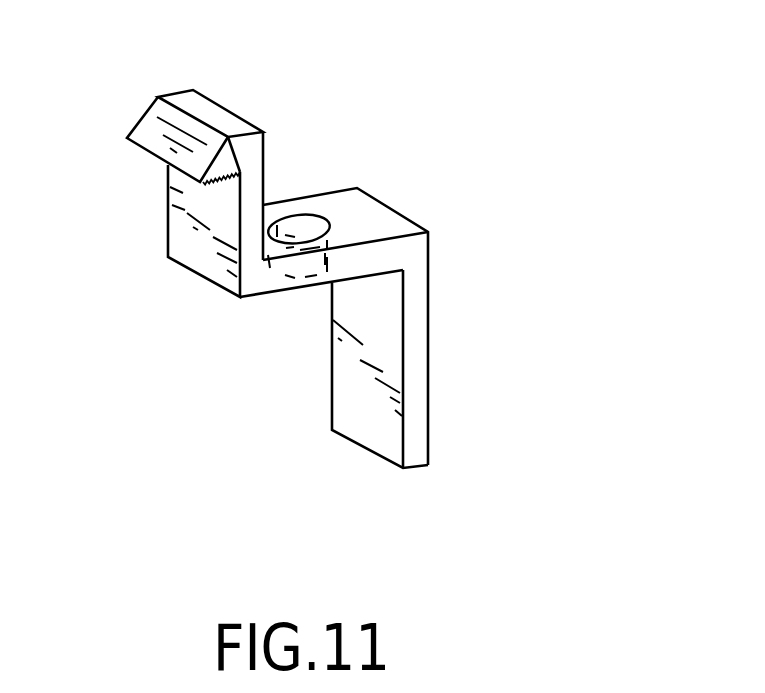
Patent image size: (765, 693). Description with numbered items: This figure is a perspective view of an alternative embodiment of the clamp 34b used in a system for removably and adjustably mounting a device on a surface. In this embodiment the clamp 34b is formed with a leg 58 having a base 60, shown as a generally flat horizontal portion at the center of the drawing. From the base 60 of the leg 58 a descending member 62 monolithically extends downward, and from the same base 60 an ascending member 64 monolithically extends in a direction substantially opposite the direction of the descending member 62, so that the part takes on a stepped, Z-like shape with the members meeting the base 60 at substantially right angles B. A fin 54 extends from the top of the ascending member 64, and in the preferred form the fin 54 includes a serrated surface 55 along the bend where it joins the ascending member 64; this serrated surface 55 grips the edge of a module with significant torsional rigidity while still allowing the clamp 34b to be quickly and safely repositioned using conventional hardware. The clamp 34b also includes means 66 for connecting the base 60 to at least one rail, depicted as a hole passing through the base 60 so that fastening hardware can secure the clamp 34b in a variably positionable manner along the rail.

The clamp 34b is at (470, 240).
The fin 54 is at (137, 128).
The serrated surface 55 is at (217, 180).
The leg 58 is at (404, 203).
The base 60 is at (390, 260).
The descending member 62 is at (418, 400).
The ascending member 64 is at (175, 235).
The means for connecting base to at least one rail 66 is at (289, 221).
The substantially right angle B is at (353, 290).